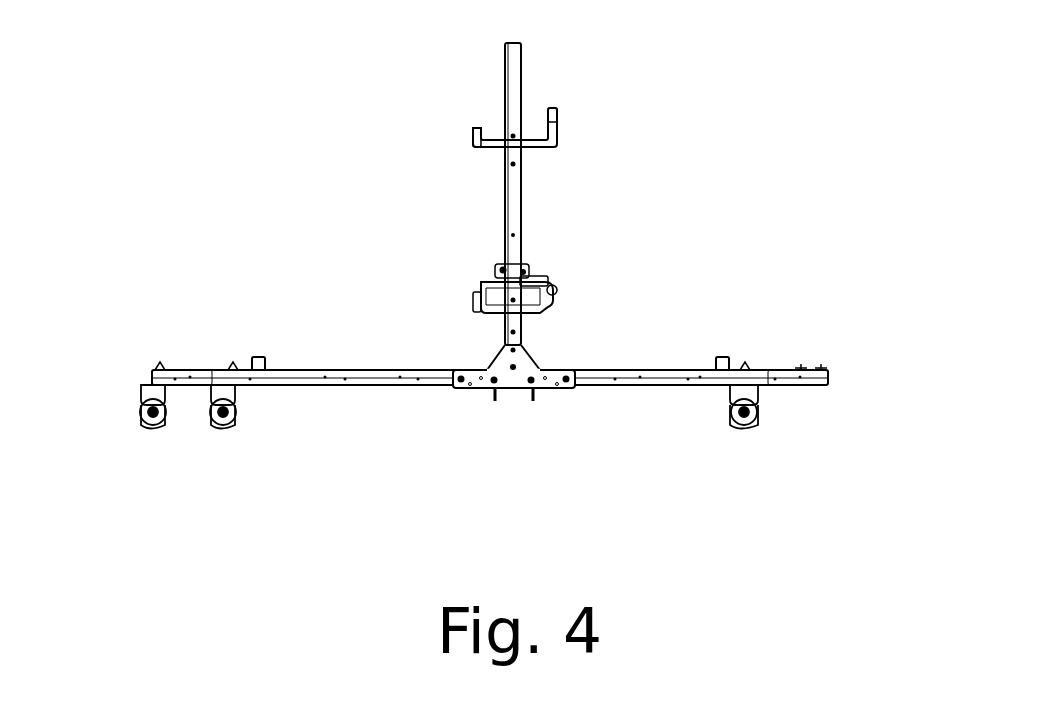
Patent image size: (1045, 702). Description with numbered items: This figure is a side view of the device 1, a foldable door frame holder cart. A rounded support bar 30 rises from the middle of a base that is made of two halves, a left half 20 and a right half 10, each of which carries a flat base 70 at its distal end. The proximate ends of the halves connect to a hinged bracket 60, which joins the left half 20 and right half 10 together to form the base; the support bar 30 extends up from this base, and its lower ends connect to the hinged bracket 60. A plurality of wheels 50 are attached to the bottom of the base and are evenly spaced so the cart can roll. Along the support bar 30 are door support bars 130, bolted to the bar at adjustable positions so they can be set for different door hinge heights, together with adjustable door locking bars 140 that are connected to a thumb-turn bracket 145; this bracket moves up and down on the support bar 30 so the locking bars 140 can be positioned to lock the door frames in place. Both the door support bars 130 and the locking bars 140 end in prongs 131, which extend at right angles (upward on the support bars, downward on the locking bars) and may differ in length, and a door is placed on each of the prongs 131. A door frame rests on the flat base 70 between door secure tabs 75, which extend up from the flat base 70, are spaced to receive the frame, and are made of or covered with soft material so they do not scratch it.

The device 1 is at (282, 108).
The right half 10 is at (830, 380).
The left half 20 is at (152, 383).
The support bar 30 is at (503, 85).
The wheels 50 is at (223, 438).
The hinged bracket 60 is at (503, 392).
The flat base 70 is at (193, 368).
The door secure tabs 75 is at (258, 357).
The door support bars 130 is at (550, 287).
The prongs 131 is at (475, 128).
The adjustable door locking bars 140 is at (482, 283).
The thumb-turn bracket 145 is at (500, 268).